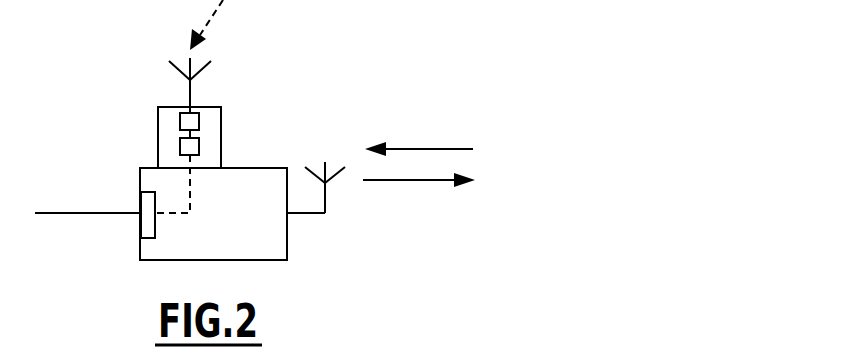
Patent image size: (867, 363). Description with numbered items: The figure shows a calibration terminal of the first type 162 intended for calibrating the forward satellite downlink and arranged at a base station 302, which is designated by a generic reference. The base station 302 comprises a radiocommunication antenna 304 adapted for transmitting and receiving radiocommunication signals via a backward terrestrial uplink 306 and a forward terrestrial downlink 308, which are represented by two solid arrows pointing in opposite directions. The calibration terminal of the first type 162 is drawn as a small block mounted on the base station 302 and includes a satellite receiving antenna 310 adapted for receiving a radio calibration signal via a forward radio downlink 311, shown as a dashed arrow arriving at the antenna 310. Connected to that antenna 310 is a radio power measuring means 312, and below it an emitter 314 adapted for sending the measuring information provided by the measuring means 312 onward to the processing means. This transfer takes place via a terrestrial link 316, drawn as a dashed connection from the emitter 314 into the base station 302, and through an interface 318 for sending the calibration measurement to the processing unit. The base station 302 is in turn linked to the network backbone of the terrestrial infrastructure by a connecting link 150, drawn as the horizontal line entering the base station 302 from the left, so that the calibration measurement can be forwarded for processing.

The connecting link 150 is at (75, 213).
The calibration terminal of the first type 162 is at (148, 108).
The base station 302 is at (287, 238).
The radiocommunication antenna 304 is at (305, 215).
The backward terrestrial uplink 306 is at (428, 183).
The forward terrestrial downlink 308 is at (413, 145).
The module antenna 310 is at (192, 88).
The forward radio downlink 311 is at (212, 12).
The radio power measuring means 312 is at (190, 123).
The emitter 314 is at (190, 148).
The terrestrial link 316 is at (172, 215).
The interface 318 is at (146, 243).